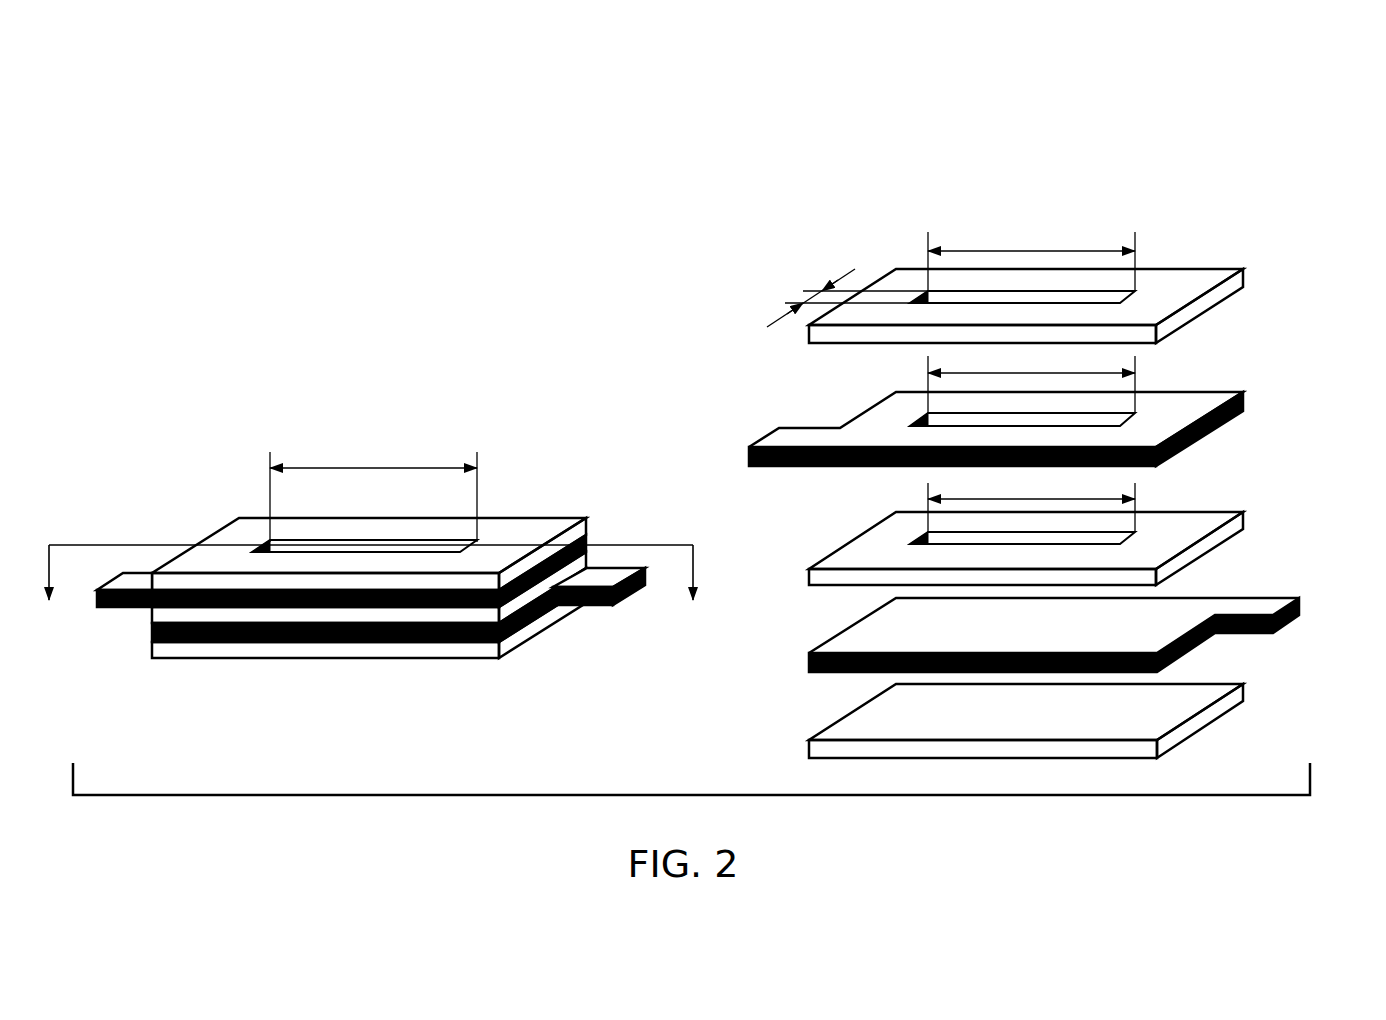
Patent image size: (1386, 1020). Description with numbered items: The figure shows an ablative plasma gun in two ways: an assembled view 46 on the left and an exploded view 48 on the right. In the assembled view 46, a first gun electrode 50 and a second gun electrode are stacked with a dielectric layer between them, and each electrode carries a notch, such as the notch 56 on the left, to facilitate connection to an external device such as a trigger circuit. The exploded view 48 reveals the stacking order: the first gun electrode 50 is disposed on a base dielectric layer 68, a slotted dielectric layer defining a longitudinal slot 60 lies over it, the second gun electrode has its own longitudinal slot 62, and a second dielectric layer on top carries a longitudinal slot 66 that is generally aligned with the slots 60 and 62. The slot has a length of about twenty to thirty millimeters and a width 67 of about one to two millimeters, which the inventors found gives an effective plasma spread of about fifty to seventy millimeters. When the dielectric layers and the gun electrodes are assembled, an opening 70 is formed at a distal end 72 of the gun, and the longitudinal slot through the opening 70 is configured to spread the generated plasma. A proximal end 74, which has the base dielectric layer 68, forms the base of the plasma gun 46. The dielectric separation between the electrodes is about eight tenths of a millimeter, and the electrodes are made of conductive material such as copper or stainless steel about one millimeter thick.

The assembled view of the ablative plasma gun 46 is at (132, 455).
The exploded view of the ablative plasma gun 48 is at (1275, 167).
The first gun electrode 50 is at (527, 627).
The notch 56 is at (145, 582).
The longitudinal slot 60 is at (1023, 498).
The longitudinal slot 62 is at (1023, 373).
The longitudinal slot 66 is at (1024, 250).
The width 67 is at (812, 296).
The base dielectric layer 68 is at (1207, 695).
The opening 70 is at (365, 467).
The distal end 72 is at (430, 540).
The proximal end 74 is at (307, 658).